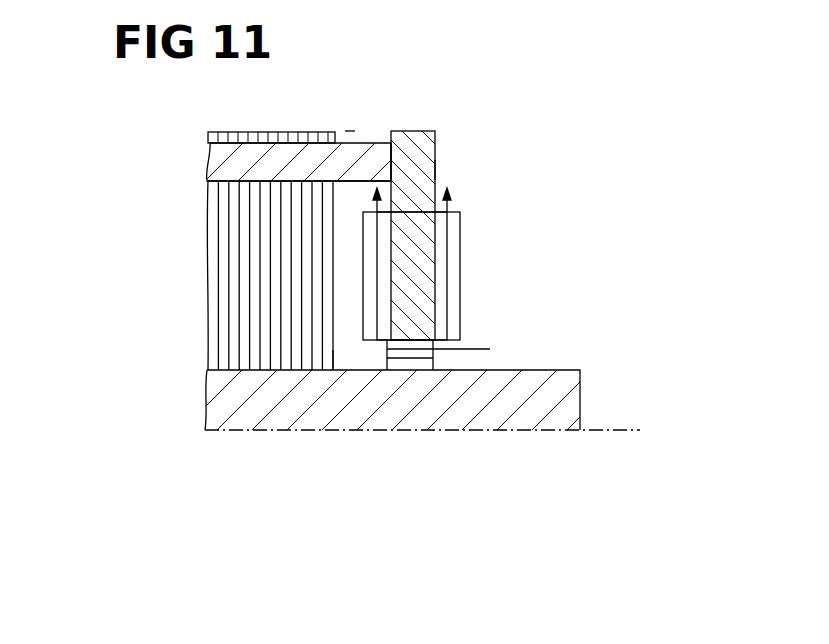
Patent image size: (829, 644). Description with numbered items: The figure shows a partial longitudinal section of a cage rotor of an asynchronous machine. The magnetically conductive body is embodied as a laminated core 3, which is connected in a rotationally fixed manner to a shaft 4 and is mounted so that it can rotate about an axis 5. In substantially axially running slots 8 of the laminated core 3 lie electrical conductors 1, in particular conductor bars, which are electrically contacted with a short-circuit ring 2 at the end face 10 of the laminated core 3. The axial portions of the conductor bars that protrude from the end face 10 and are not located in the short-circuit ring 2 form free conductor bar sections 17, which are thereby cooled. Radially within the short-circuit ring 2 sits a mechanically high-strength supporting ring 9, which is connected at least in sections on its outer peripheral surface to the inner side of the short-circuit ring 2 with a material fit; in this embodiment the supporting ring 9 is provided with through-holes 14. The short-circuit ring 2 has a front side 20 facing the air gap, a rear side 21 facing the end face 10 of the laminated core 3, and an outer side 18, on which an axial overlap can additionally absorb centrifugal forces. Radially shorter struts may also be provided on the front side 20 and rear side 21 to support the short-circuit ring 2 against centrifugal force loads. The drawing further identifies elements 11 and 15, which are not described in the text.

The electrical conductors 1 is at (350, 131).
The short-circuit ring 2 is at (436, 149).
The laminated core 3 is at (222, 243).
The shaft 4 is at (545, 377).
The axis 5 is at (627, 429).
The slots 8 is at (276, 131).
The supporting ring 9 is at (421, 267).
The end face 10 is at (337, 350).
The frame 11 is at (461, 217).
The through-holes 14 is at (410, 372).
The connection line 15 is at (477, 344).
The free conductor bar sections 17 is at (355, 182).
The outer side 18 is at (418, 131).
The front side 20 is at (436, 170).
The rear side 21 is at (382, 142).